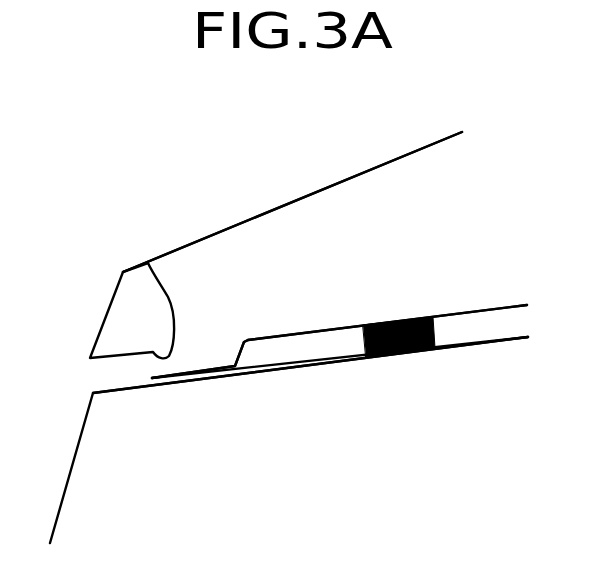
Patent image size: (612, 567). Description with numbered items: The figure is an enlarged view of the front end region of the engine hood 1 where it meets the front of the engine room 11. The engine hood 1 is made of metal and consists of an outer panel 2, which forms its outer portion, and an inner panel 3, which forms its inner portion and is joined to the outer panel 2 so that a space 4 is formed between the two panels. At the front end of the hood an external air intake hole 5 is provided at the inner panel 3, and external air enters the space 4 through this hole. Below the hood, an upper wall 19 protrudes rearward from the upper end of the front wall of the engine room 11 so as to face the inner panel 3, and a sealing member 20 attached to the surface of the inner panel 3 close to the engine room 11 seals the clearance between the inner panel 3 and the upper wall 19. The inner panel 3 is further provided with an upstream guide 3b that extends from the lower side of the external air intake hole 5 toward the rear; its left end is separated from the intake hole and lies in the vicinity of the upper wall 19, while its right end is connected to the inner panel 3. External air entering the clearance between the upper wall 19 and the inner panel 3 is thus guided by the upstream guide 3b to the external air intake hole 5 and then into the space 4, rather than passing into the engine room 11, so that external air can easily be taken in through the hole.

The engine hood 1 is at (374, 154).
The outer panel 2 is at (295, 201).
The inner panel 3 is at (325, 329).
The upstream guide 3b is at (241, 353).
The space 4 is at (280, 283).
The external air intake hole 5 is at (147, 263).
The engine room 11 is at (187, 457).
The upper wall 19 is at (322, 365).
The sealing member 20 is at (407, 358).